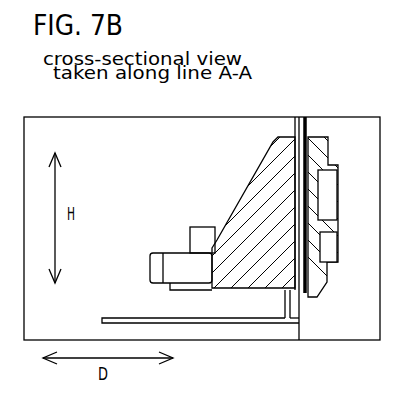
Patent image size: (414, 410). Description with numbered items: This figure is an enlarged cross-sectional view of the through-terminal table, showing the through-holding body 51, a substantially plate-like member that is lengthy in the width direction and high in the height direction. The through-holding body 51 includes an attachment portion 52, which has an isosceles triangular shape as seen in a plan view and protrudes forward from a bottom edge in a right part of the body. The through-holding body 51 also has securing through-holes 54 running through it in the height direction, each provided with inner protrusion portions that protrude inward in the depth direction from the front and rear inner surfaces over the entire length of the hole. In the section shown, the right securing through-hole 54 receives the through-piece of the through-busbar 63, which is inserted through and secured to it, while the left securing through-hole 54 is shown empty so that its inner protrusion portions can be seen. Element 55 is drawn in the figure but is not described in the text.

The through-holding body 51 is at (338, 284).
The attachment portion 52 is at (150, 263).
The securing through-hole 54 is at (314, 140).
The inclined block 55 is at (241, 197).
The through-busbar 63 is at (232, 324).